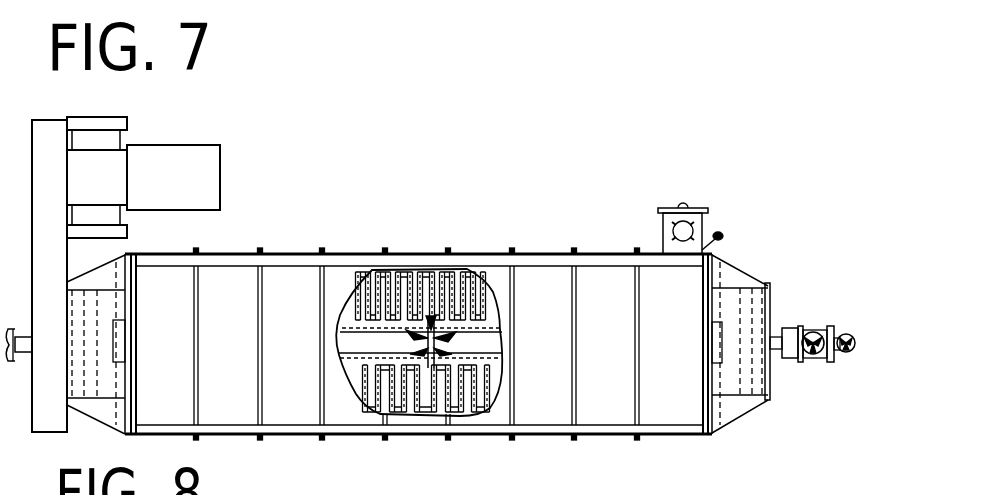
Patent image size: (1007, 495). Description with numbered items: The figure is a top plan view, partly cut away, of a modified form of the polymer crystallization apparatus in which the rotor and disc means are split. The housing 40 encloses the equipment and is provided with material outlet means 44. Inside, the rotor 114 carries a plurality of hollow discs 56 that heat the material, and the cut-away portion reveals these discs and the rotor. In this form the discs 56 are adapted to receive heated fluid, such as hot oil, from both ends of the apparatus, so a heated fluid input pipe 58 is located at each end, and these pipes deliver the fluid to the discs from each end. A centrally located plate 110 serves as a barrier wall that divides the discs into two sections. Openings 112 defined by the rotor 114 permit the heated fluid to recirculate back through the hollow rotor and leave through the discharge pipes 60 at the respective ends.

The housing 40 is at (490, 250).
The material outlet means 44 is at (663, 240).
The hollow discs 56 is at (386, 292).
The heated fluid input pipe 58 is at (25, 333).
The discharge pipe 60 is at (848, 353).
The centrally located plate 110 is at (430, 290).
The openings 112 is at (447, 338).
The rotor 114 is at (482, 378).